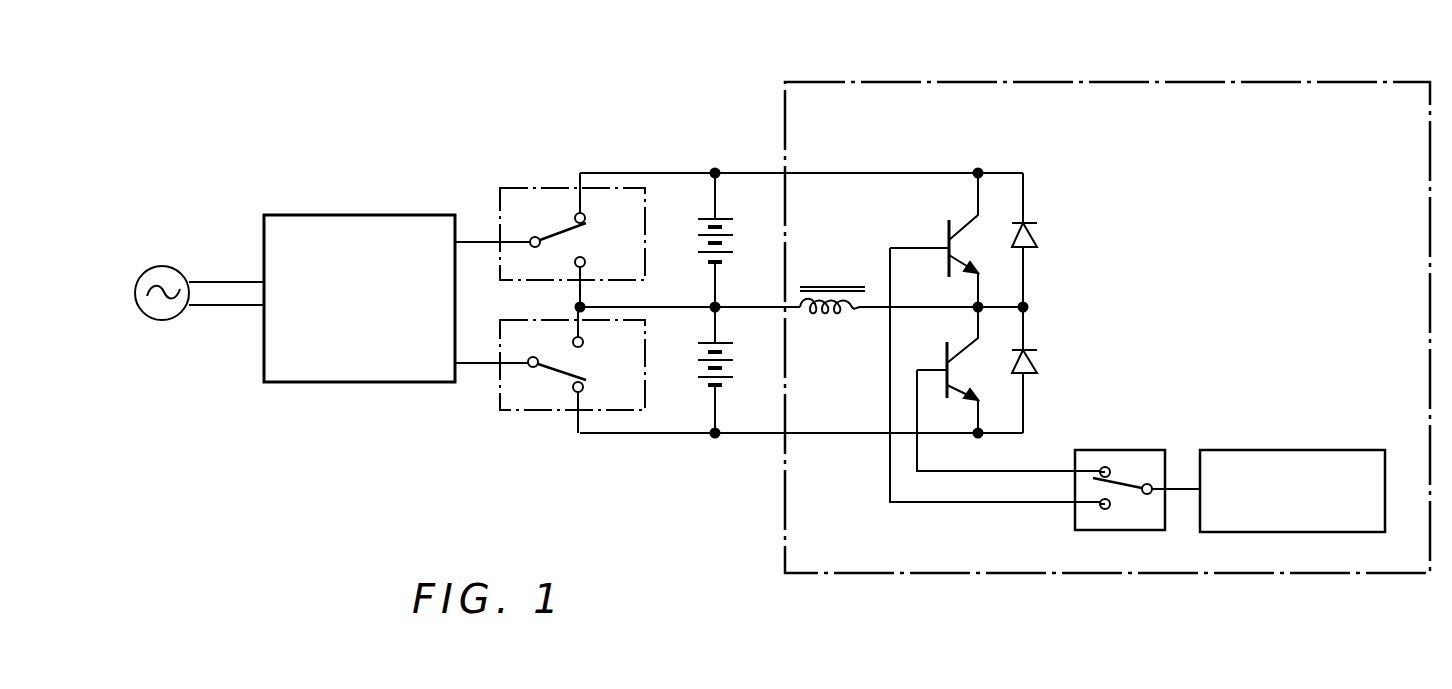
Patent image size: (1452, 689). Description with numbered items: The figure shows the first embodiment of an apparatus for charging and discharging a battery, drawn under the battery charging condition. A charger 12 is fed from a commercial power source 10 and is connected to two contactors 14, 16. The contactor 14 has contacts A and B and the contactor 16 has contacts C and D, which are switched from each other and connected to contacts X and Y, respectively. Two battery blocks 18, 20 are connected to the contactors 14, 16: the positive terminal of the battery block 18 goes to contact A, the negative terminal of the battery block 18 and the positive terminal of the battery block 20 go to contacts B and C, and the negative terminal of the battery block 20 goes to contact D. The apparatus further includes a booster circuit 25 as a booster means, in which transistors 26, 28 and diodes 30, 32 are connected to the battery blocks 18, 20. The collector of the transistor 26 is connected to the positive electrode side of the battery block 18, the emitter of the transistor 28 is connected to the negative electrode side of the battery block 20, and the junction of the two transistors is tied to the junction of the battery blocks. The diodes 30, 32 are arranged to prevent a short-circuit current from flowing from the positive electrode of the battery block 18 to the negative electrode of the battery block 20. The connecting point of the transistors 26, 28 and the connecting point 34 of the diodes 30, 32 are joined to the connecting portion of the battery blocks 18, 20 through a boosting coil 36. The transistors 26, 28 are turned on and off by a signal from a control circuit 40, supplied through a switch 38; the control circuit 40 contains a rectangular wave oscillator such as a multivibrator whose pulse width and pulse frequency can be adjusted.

The commercial power source 10 is at (162, 321).
The charger 12 is at (387, 215).
The contactor 14 is at (530, 187).
The contactor 16 is at (513, 412).
The battery block 18 is at (750, 244).
The battery block 20 is at (740, 360).
The booster circuit 25 is at (990, 82).
The transistor 26 is at (936, 241).
The transistor 28 is at (966, 377).
The diode 30 is at (1038, 237).
The diode 32 is at (1038, 367).
The connecting point 34 is at (1028, 307).
The boosting coil 36 is at (832, 282).
The switch 38 is at (1120, 450).
The control circuit 40 is at (1277, 450).